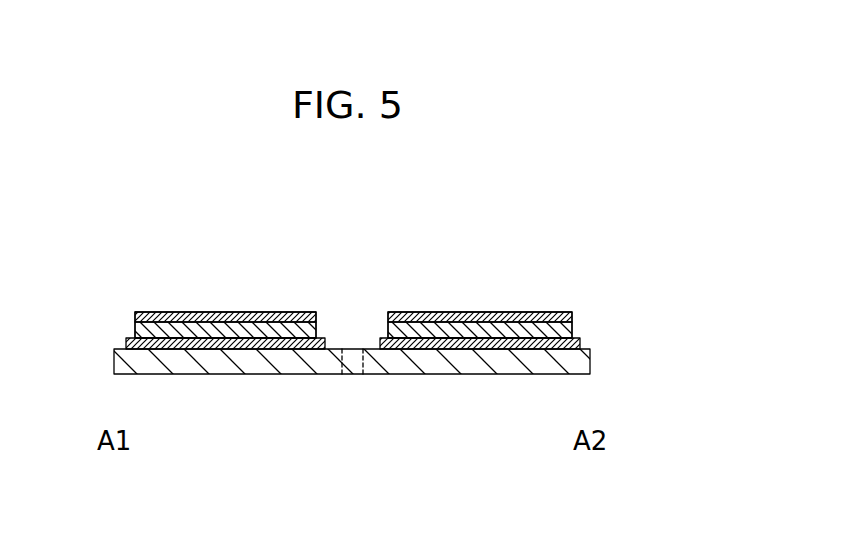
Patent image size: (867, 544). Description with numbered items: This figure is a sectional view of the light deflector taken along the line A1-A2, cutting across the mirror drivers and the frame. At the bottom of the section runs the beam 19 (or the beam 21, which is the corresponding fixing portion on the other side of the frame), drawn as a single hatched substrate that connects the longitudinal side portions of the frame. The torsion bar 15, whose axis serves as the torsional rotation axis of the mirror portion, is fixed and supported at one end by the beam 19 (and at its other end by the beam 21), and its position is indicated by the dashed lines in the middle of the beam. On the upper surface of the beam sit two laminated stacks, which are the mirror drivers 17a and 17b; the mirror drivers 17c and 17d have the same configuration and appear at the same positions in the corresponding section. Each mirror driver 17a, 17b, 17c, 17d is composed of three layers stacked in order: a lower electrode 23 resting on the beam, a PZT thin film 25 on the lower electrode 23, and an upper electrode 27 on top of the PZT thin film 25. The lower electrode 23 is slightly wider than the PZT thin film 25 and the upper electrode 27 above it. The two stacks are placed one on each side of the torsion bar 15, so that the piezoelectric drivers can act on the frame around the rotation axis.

The torsion bar 15 is at (377, 375).
The mirror driver 17a is at (209, 274).
The mirror driver 17b is at (501, 274).
The mirror driver 17c is at (193, 293).
The mirror driver 17d is at (523, 293).
The beam 19 is at (416, 372).
The beam 21 is at (590, 362).
The lower electrode 23 is at (126, 343).
The PZT thin film 25 is at (135, 331).
The upper electrode 27 is at (135, 314).